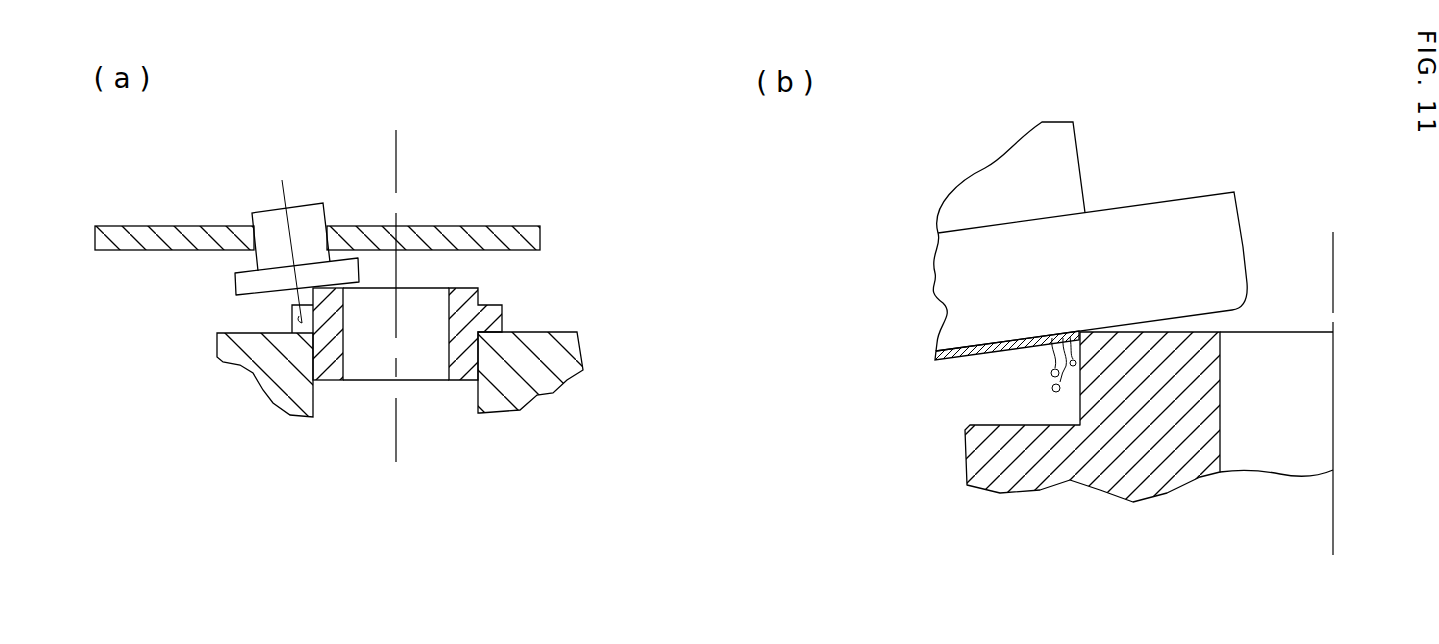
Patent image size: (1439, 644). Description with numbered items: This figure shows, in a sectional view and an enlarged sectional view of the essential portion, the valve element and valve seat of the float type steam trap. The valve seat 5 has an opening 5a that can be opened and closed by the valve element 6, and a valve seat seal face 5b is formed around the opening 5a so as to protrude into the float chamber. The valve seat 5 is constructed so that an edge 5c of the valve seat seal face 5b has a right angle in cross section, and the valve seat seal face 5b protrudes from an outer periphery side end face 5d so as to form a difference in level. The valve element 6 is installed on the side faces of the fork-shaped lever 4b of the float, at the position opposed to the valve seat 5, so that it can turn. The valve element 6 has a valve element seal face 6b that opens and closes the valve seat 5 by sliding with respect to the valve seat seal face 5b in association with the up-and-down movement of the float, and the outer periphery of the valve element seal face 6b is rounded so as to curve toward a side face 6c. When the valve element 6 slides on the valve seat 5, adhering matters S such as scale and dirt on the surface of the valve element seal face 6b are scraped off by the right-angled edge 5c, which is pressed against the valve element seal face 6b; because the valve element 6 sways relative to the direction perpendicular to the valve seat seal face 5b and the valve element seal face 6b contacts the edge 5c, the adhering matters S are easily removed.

The lever 4b is at (478, 227).
The valve seat 5 is at (297, 323).
The opening 5a is at (1273, 330).
The valve seat seal face 5b is at (1177, 330).
The edge 5c is at (1100, 328).
The outer periphery side end face 5d is at (1057, 423).
The valve element 6 is at (278, 218).
The valve element seal face 6b is at (1015, 345).
The side face 6c is at (1247, 243).
The adhering matters S is at (935, 362).